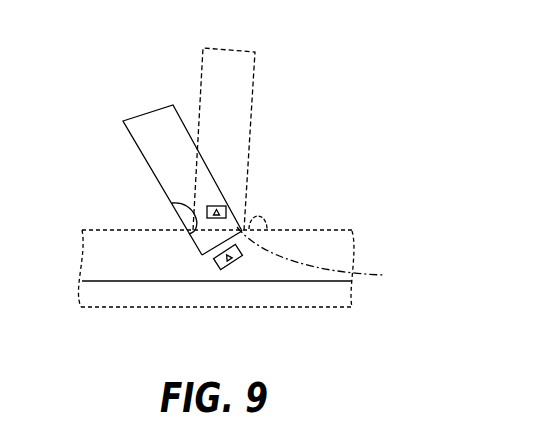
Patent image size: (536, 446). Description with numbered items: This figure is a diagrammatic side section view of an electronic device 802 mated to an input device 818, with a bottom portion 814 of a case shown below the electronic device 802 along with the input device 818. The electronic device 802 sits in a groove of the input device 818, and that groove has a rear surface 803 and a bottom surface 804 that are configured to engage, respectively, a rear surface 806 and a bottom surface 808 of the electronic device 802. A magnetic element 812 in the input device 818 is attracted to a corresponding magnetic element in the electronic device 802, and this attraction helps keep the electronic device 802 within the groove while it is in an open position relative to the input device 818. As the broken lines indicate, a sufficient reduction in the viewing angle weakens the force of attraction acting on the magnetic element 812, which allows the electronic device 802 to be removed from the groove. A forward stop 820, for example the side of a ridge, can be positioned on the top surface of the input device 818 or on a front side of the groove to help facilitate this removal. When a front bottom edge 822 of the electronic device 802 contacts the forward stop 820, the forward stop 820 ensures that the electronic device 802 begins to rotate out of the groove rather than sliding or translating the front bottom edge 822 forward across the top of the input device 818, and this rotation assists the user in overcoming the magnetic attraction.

The electronic device 802 is at (130, 132).
The rear surface 803 is at (171, 203).
The bottom surface 804 is at (242, 231).
The rear surface 806 is at (142, 154).
The bottom surface 808 is at (205, 255).
The magnetic element 812 is at (240, 258).
The bottom portion 814 is at (318, 293).
The input device 818 is at (333, 240).
The forward stop 820 is at (263, 216).
The front bottom edge 822 is at (331, 259).